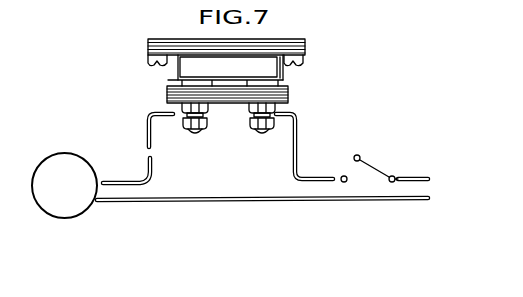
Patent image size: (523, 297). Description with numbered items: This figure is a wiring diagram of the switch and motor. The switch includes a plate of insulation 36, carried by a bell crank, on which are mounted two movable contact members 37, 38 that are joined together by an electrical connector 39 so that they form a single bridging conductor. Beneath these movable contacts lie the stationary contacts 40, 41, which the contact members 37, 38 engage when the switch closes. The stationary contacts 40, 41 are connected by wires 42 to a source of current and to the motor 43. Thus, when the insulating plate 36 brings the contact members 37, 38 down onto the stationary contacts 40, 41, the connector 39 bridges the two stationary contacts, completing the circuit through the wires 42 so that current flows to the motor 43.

The plate of insulation 36 is at (148, 42).
The contact member 37 is at (157, 62).
The contact member 38 is at (306, 63).
The electrical connector 39 is at (283, 78).
The stationary contact 40 is at (178, 80).
The stationary contact 41 is at (288, 86).
The wires 42 is at (151, 170).
The motor 43 is at (60, 153).